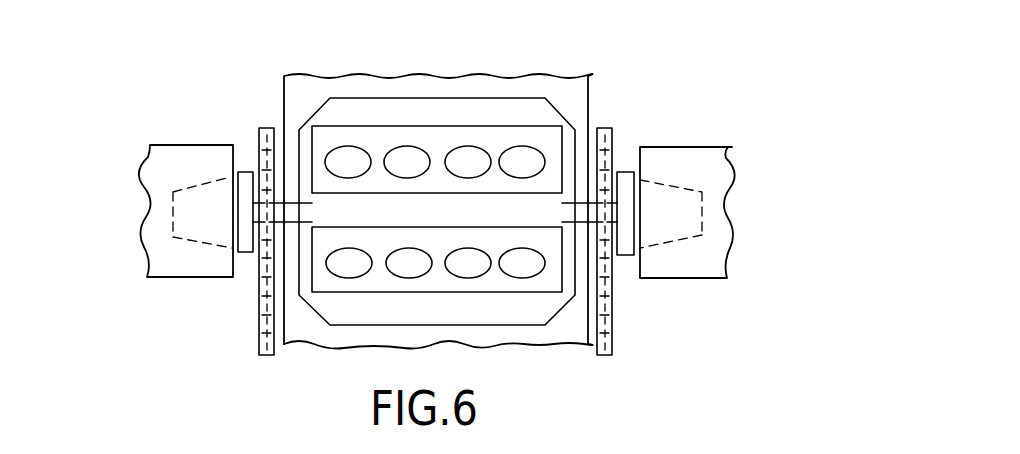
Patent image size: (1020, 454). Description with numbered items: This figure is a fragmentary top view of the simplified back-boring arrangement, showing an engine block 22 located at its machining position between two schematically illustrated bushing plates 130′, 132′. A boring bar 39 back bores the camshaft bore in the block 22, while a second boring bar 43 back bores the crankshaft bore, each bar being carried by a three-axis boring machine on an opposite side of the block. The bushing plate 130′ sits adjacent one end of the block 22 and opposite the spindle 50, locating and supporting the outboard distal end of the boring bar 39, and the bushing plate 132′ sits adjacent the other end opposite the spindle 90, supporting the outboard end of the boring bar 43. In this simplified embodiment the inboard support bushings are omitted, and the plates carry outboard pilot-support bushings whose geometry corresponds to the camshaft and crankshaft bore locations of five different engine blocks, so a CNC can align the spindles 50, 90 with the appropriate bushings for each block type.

The engine block 22 is at (442, 135).
The boring bar 39 is at (300, 214).
The second boring bar 43 is at (573, 209).
The spindle 50 is at (205, 272).
The spindle 90 is at (702, 278).
The bushing plate 130′ is at (603, 128).
The bushing plate 132′ is at (267, 128).